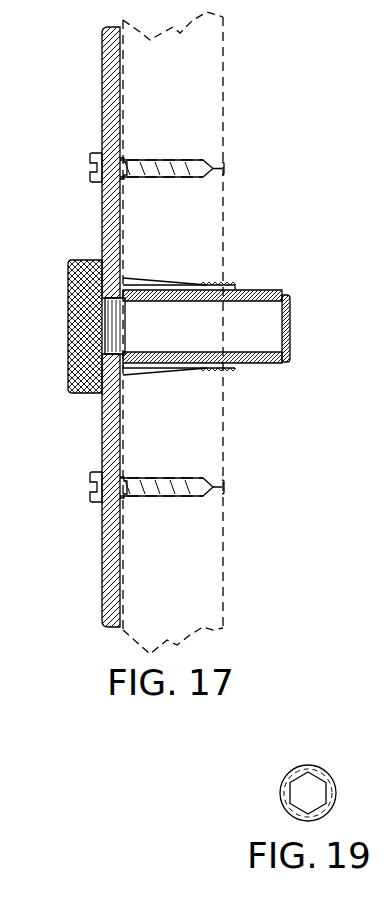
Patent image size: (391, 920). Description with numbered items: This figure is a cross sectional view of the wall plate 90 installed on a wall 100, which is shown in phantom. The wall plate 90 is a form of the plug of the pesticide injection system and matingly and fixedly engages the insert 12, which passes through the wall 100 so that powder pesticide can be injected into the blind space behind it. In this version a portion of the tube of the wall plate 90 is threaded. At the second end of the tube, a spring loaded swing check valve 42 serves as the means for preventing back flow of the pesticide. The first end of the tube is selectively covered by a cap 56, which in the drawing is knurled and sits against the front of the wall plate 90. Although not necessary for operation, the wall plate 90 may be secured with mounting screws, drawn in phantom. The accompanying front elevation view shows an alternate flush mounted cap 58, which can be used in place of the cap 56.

In FIG. 17, the insert 12 is at (232, 282).
In FIG. 17, the spring loaded swing check valve 42 is at (291, 344).
In FIG. 17, the cap 56 is at (72, 260).
In FIG. 19, the flush mounted cap 58 is at (305, 766).
In FIG. 17, the wall plate 90 is at (102, 99).
In FIG. 17, the wall 100 is at (197, 115).